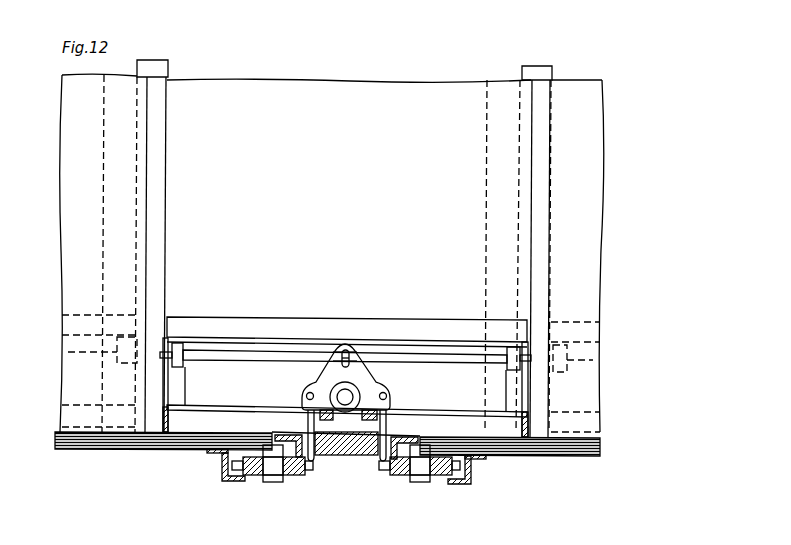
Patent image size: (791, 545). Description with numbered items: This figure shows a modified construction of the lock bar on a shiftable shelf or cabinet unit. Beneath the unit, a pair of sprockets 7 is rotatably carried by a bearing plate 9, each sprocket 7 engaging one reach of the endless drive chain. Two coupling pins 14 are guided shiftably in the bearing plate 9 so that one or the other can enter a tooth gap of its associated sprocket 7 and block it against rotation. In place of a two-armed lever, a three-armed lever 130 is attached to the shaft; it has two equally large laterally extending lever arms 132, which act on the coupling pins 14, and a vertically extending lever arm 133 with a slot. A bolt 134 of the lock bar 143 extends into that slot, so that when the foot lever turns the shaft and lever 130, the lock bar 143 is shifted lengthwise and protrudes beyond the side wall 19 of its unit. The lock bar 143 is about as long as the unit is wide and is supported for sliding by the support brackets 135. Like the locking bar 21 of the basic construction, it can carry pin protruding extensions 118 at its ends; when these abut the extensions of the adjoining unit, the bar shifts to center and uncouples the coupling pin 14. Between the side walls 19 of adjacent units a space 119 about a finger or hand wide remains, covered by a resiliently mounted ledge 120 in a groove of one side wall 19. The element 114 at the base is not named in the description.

The sprocket 7 is at (292, 477).
The bearing plate 9 is at (350, 452).
The coupling pin 14 is at (307, 417).
The side wall 19 is at (74, 189).
The locking bar 21 is at (68, 355).
The base plate 114 is at (542, 443).
The pin protruding extension 118 is at (163, 357).
The space 119 is at (149, 182).
The ledge 120 is at (150, 68).
The three-armed lever 130 is at (367, 372).
The laterally extending lever arm 132 is at (323, 390).
The vertically extending lever arm 133 is at (333, 358).
The bolt 134 is at (352, 322).
The support bracket 135 is at (182, 335).
The lock bar 143 is at (220, 357).